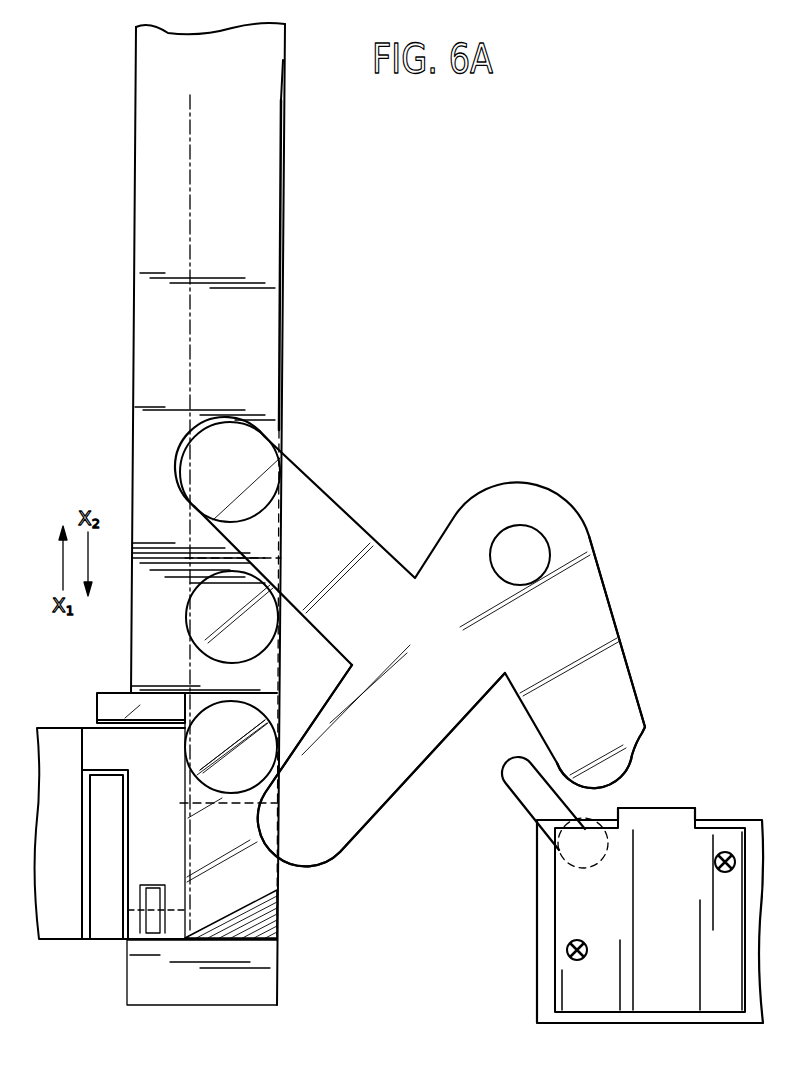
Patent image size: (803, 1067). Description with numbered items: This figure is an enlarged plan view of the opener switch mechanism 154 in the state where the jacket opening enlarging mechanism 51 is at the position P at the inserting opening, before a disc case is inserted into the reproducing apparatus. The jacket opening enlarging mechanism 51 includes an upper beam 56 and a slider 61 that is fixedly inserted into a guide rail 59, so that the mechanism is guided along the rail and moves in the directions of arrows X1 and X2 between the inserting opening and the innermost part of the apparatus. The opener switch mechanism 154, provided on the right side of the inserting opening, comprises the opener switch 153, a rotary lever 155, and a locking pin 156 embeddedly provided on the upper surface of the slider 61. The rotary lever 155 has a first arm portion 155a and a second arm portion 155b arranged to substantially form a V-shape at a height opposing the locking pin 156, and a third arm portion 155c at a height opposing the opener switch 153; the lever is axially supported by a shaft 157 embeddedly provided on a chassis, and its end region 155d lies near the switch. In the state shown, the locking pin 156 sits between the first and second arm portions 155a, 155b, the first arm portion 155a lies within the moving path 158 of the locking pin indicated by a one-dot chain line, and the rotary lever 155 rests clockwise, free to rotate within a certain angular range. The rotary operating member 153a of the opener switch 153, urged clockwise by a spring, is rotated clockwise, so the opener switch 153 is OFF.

The jacket opening enlarging mechanism 51 is at (62, 940).
The upper beam 56 is at (62, 728).
The guide rail 59 is at (286, 82).
The slider 61 is at (278, 892).
The opener switch 153 is at (565, 912).
The rotary operating member 153a is at (522, 792).
The opener switch mechanism 154 is at (108, 139).
The rotary lever 155 is at (492, 490).
The first arm portion 155a is at (262, 452).
The second arm portion 155b is at (340, 857).
The third arm portion 155c is at (625, 682).
The end portion of lever 155d is at (628, 752).
The locking pin 156 is at (187, 606).
The shaft 157 is at (537, 580).
The moving path 158 is at (190, 206).
The position P is at (280, 941).